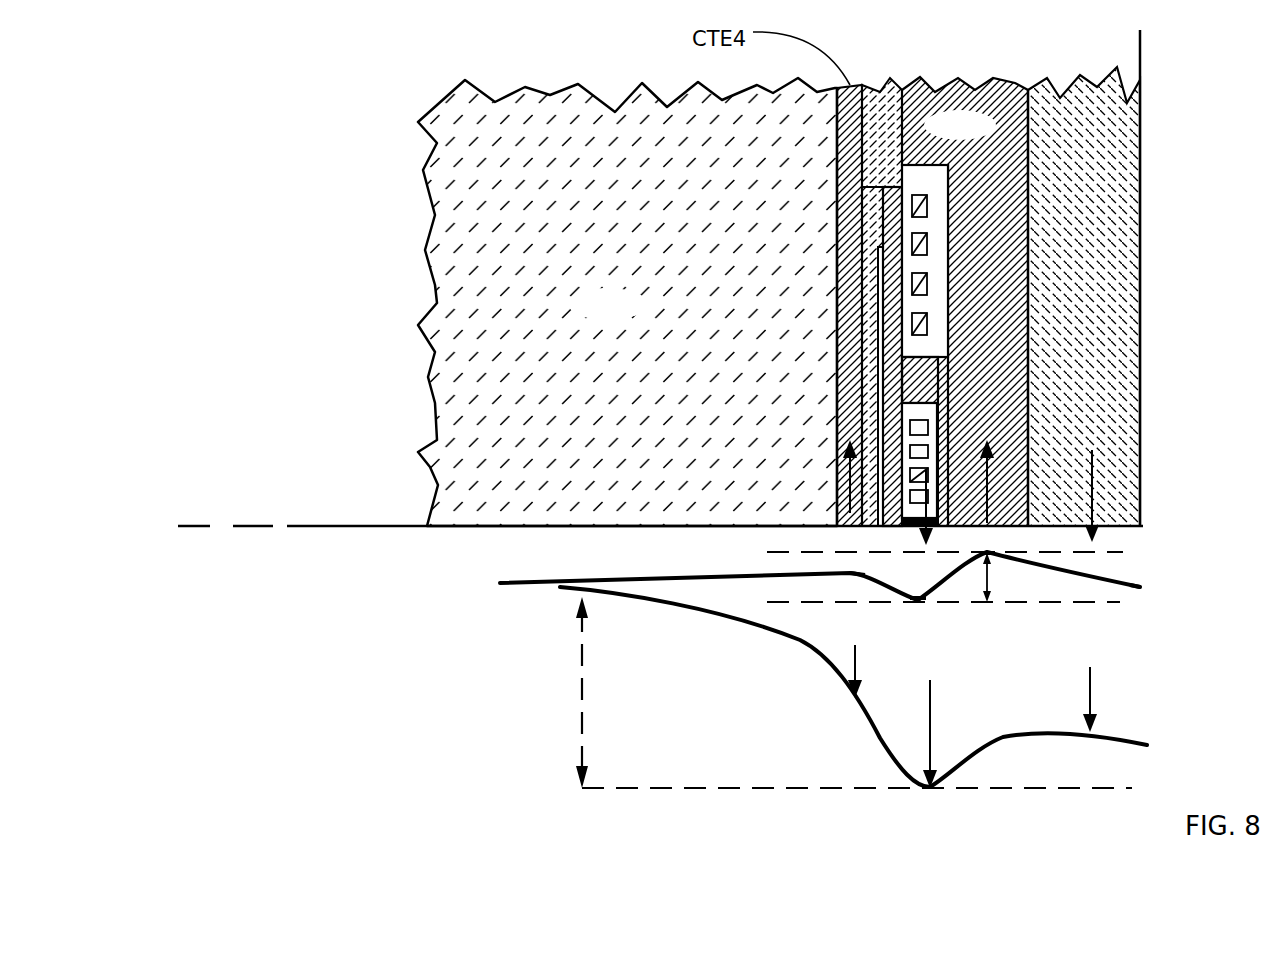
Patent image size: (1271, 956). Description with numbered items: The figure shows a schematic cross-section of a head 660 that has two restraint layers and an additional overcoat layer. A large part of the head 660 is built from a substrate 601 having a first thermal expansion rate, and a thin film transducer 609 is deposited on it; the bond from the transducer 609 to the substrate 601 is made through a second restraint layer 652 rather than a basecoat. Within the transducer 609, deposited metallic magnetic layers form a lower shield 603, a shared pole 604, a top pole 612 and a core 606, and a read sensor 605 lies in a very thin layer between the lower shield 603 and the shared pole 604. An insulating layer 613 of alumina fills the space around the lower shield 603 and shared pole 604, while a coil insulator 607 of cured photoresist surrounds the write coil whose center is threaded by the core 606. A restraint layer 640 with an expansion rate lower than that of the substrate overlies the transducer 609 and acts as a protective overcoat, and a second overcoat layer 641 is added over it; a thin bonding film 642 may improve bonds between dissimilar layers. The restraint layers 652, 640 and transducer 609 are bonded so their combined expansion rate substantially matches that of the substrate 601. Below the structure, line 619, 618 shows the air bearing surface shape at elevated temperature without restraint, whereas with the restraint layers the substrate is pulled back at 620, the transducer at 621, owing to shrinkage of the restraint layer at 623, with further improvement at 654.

The head 660 is at (360, 84).
The substrate 601 is at (757, 87).
The second restraint layer 652 is at (852, 93).
The insulating layer 613 is at (873, 88).
The lower shield 603 is at (868, 375).
The shared pole 604 is at (893, 343).
The transducer 609 is at (858, 283).
The read sensor 605 is at (878, 526).
The restraint layer 640 is at (987, 83).
The second overcoat layer 641 is at (1110, 78).
The bonding film 642 is at (1032, 225).
The coil insulator 607 is at (923, 182).
The core 606 is at (923, 373).
The top pole 612 is at (945, 418).
The air bearing surface shape line 619 is at (513, 585).
The air bearing surface shape line without restraint layer 618 is at (930, 787).
The substrate pull-back point 620 is at (857, 575).
The head pull-back point 621 is at (918, 600).
The restraint layer shrinkage point 623 is at (993, 555).
The improved air bearing surface shape point 654 is at (1142, 590).